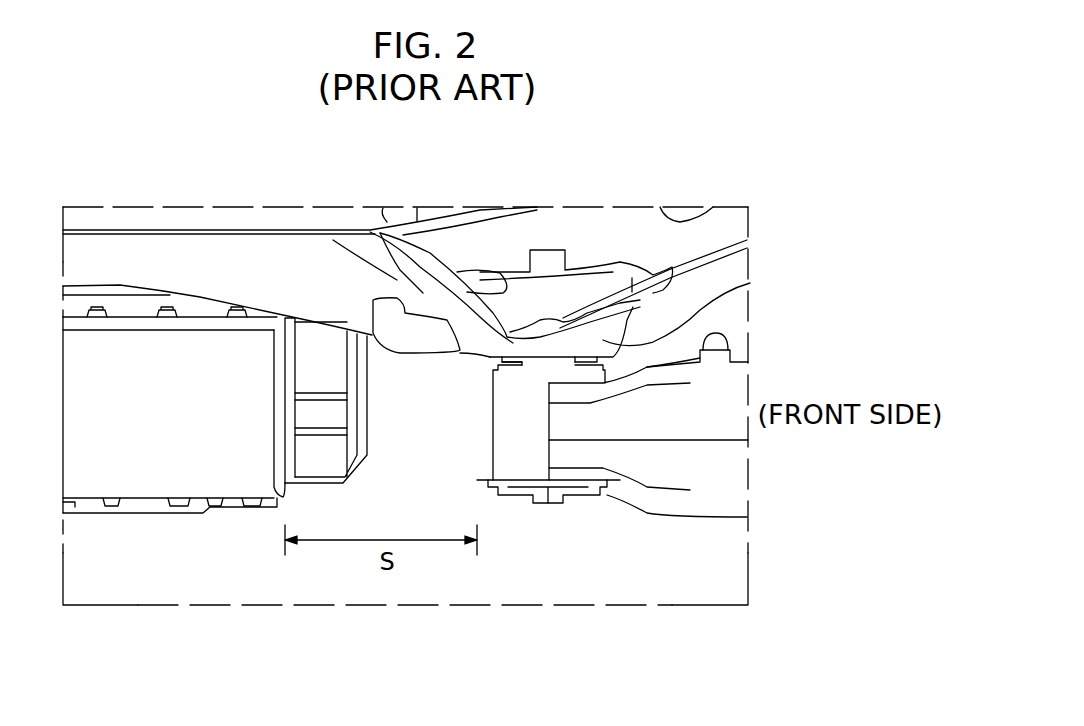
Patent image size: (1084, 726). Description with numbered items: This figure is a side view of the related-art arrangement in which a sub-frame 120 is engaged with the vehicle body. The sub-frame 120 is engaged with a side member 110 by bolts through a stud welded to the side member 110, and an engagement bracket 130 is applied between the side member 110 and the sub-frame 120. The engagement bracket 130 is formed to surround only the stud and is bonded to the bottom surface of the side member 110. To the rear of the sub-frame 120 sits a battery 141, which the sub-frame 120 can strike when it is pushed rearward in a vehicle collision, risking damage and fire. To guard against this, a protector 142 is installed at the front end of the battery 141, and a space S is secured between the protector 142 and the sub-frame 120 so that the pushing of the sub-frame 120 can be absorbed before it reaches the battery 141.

The side member 110 is at (295, 265).
The sub-frame 120 is at (530, 460).
The engagement bracket 130 is at (603, 348).
The battery 141 is at (147, 487).
The protector 142 is at (323, 483).